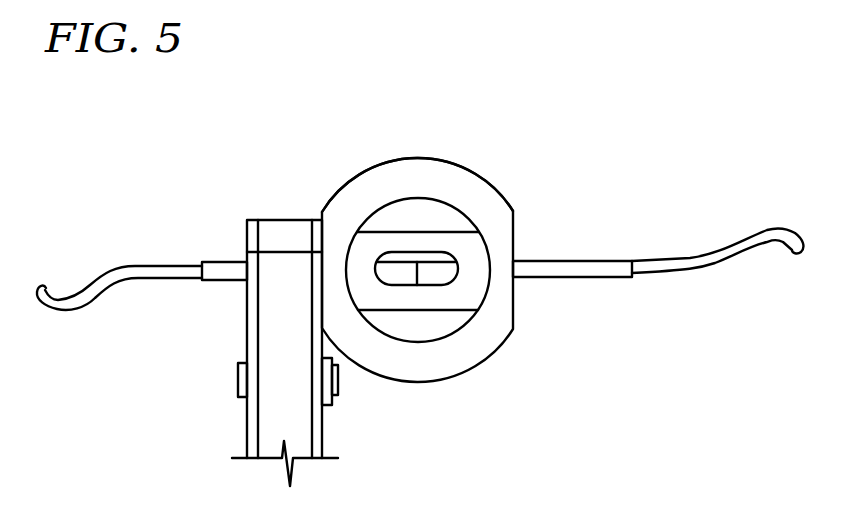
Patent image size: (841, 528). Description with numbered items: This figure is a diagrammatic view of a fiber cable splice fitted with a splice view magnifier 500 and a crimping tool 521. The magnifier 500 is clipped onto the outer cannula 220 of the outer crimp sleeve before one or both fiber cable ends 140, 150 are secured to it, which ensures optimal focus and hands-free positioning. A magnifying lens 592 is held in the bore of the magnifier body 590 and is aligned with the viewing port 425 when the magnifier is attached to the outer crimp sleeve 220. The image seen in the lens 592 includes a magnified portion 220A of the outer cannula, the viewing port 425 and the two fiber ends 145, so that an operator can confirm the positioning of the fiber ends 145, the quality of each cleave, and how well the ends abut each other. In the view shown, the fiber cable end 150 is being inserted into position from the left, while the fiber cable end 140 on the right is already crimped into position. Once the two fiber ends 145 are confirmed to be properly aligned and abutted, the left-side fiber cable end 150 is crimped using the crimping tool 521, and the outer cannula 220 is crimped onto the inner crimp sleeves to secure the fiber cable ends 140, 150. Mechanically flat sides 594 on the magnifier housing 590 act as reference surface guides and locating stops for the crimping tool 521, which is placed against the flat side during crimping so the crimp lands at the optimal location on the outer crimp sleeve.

The magnifier 500 is at (251, 144).
The magnifier body 590 is at (420, 168).
The magnifying lens 592 is at (447, 218).
The flat sides 594 is at (514, 232).
The magnified portion of the outer cannula 220A is at (363, 247).
The viewing port 425 is at (399, 286).
The fiber ends 145 is at (437, 273).
The crimping tool 521 is at (275, 332).
The fiber cable end 150 is at (112, 277).
The outer cannula 220 is at (577, 280).
The fiber cable end 140 is at (686, 278).